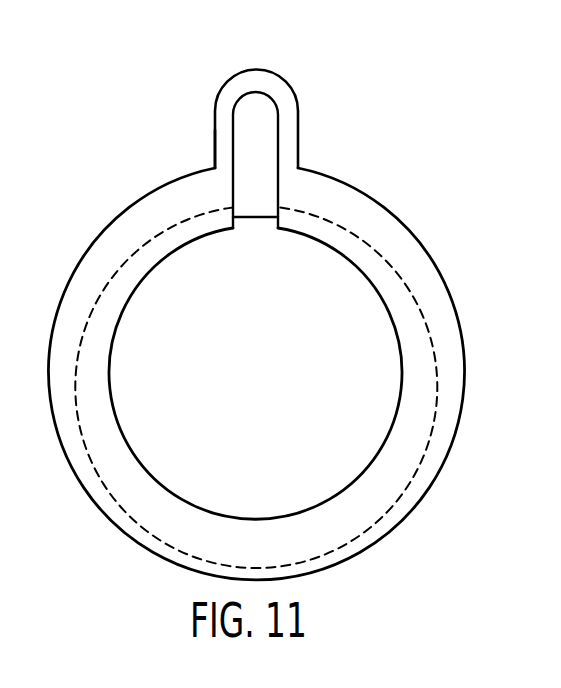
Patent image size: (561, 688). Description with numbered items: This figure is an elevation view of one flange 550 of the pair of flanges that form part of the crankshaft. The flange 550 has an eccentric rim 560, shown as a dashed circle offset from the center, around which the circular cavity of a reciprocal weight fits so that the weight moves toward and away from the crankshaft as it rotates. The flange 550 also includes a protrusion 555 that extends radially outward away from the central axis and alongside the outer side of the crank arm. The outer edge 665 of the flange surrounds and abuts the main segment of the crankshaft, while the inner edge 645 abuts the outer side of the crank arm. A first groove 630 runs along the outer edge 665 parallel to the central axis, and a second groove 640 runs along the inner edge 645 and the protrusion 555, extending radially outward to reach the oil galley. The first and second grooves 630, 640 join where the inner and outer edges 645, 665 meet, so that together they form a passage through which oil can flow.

The flange 550 is at (424, 196).
The protrusion 555 is at (290, 83).
The eccentric rim 560 is at (410, 284).
The first groove 630 is at (252, 233).
The second groove 640 is at (263, 135).
The inner edge 645 is at (222, 143).
The outer edge 665 is at (122, 315).